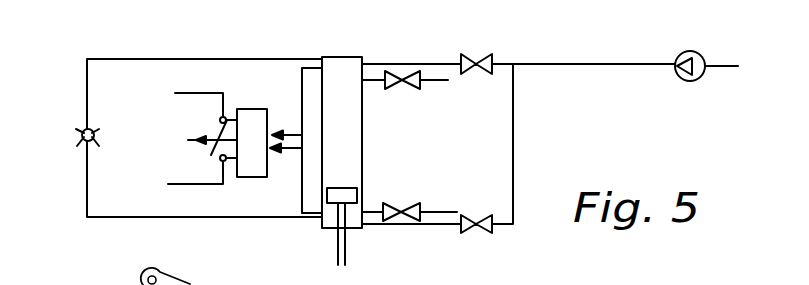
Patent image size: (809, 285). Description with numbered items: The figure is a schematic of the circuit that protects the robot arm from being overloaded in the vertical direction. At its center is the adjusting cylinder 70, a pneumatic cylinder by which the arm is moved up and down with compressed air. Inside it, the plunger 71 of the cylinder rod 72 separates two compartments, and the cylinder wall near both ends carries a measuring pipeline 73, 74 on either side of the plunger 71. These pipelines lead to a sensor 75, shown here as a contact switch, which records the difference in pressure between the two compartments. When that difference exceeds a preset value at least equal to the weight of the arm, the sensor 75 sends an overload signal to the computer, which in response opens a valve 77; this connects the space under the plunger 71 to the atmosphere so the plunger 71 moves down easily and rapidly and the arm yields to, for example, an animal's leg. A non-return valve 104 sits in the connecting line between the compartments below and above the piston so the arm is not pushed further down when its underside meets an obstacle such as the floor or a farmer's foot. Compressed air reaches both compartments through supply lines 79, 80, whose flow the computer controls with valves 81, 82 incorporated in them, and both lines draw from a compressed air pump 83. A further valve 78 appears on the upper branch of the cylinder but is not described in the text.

The adjusting cylinder 70 is at (364, 136).
The plunger 71 is at (345, 188).
The cylinder rod 72 is at (350, 258).
The measuring pipeline 73 is at (300, 213).
The measuring pipeline 74 is at (302, 80).
The sensor 75 is at (258, 99).
The valve 77 is at (418, 204).
The upper valve 78 is at (417, 90).
The supply line 79 is at (514, 143).
The supply line 80 is at (405, 64).
The valve 81 is at (492, 235).
The valve 82 is at (494, 61).
The compressed air pump 83 is at (683, 81).
The non-return valve 104 is at (83, 142).